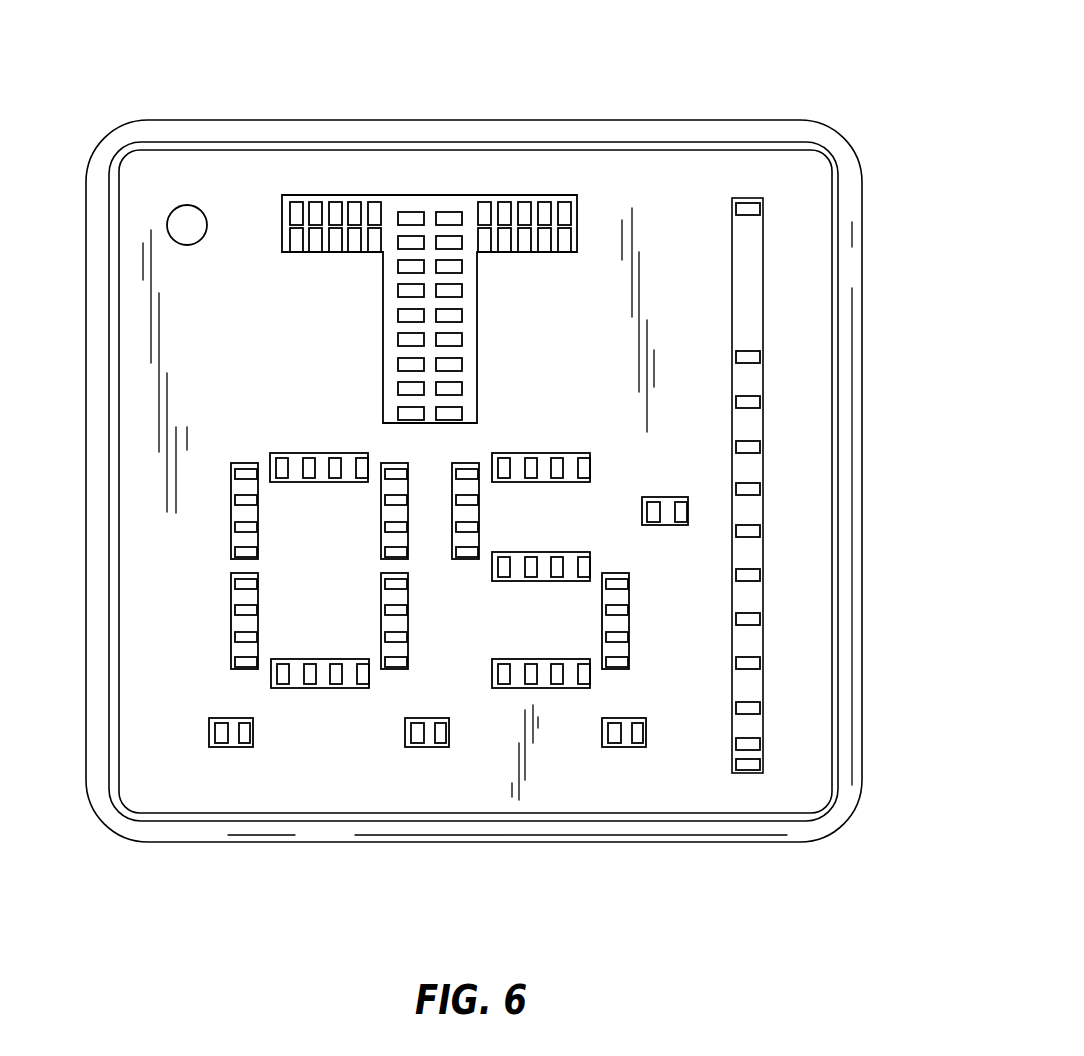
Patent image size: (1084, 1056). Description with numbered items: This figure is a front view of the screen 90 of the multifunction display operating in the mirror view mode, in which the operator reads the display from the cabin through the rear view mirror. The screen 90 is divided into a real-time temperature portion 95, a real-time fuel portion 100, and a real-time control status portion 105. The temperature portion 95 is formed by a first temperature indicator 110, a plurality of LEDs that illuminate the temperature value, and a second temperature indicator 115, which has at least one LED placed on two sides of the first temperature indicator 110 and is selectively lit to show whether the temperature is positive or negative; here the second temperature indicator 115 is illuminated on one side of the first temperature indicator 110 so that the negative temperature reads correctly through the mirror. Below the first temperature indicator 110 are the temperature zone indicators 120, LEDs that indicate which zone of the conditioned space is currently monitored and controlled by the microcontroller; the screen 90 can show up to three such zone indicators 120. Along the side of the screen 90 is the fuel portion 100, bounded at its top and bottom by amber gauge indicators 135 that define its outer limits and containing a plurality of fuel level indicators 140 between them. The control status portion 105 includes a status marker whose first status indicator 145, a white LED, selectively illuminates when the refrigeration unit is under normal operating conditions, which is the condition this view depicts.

The screen 90 is at (145, 84).
The real-time temperature portion 95 is at (320, 453).
The real-time fuel portion 100 is at (765, 319).
The real-time control status portion 105 is at (437, 199).
The first temperature indicator 110 is at (335, 690).
The second temperature indicator 115 is at (682, 510).
The temperature zone indicator 120 is at (253, 736).
The gauge indicators 135 is at (753, 212).
The fuel level indicators 140 is at (755, 448).
The first status indicator 145 is at (543, 213).